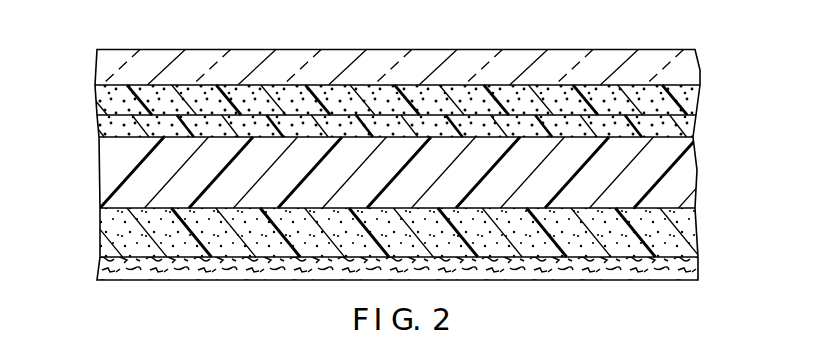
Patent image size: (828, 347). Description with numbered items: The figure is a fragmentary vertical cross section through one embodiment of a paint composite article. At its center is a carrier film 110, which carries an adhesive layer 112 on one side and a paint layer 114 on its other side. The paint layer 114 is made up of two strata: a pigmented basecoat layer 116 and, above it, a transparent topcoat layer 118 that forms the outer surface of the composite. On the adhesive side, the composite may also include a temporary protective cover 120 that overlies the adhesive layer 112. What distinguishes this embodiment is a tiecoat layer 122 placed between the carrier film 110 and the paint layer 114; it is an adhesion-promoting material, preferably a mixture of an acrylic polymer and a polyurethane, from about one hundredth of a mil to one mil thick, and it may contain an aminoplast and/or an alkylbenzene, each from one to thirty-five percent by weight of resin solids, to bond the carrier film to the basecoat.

The carrier film 110 is at (698, 172).
The adhesive layer 112 is at (698, 234).
The paint layer 114 is at (88, 90).
The pigmented basecoat layer 116 is at (701, 100).
The transparent topcoat layer 118 is at (699, 53).
The temporary protective cover 120 is at (97, 268).
The tiecoat layer 122 is at (96, 125).